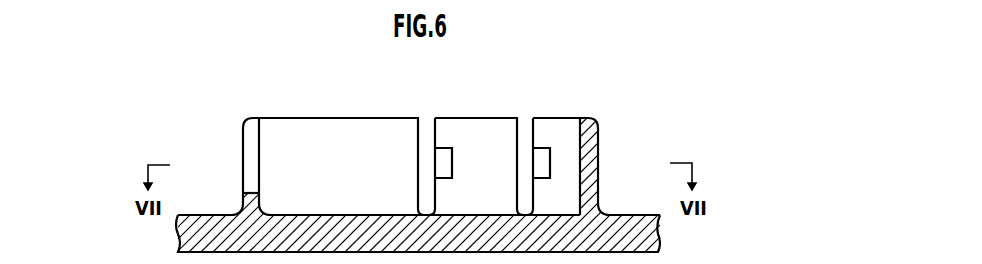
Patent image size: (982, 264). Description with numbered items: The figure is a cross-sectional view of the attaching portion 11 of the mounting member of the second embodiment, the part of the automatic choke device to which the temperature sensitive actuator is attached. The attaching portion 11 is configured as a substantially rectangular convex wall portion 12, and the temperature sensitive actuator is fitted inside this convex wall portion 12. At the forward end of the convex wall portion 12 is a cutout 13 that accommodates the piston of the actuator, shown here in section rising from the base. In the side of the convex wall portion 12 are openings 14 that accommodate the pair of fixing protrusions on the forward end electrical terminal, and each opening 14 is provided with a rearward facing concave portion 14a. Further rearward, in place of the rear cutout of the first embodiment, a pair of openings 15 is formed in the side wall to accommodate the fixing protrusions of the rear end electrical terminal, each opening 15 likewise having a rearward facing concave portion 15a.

The attaching portion 11 is at (282, 100).
The convex wall portion 12 is at (368, 117).
The cutout 13 is at (249, 140).
The opening 14 is at (427, 123).
The rearward facing concave portion 14a is at (442, 162).
The opening 15 is at (525, 123).
The rearward facing concave portion 15a is at (540, 162).